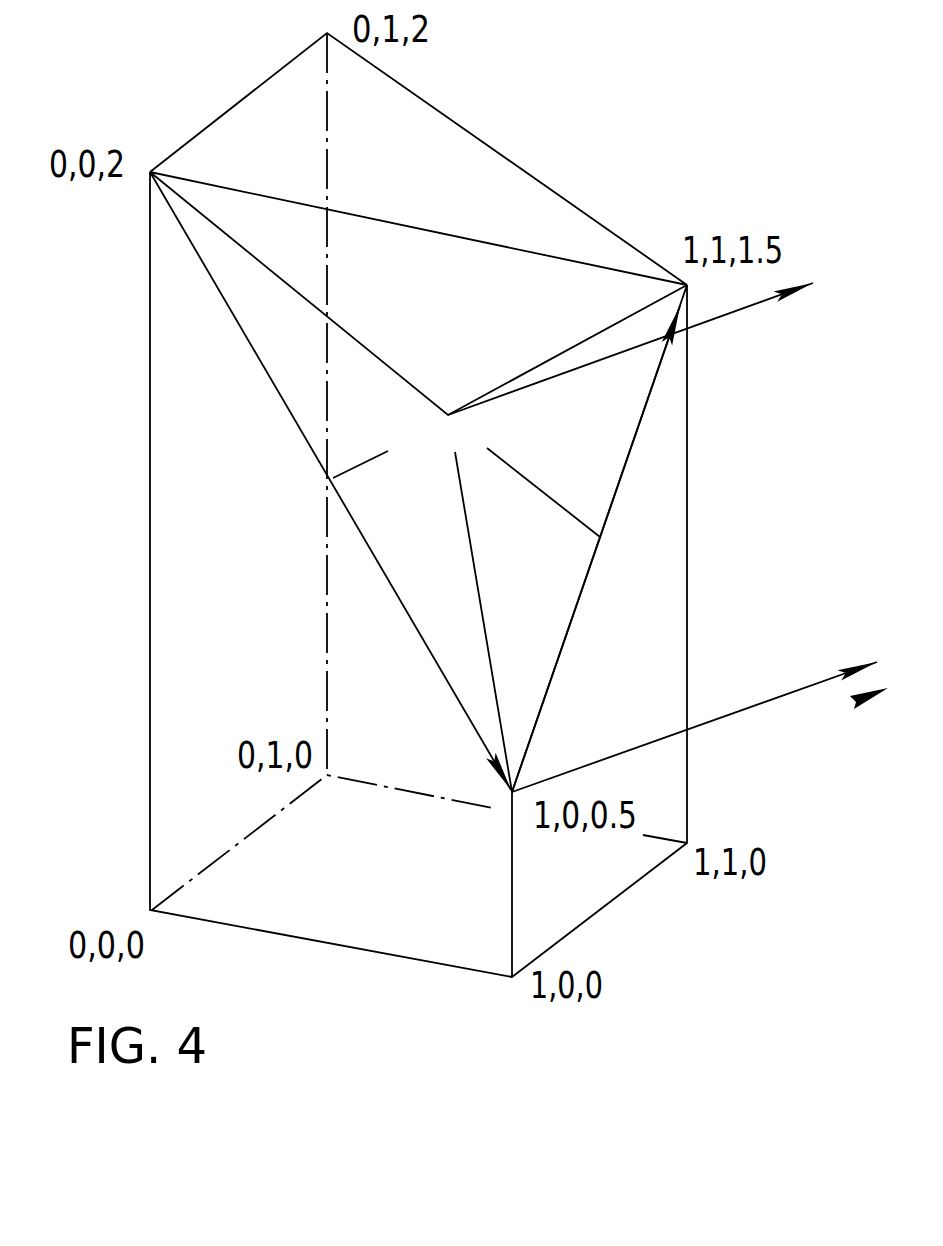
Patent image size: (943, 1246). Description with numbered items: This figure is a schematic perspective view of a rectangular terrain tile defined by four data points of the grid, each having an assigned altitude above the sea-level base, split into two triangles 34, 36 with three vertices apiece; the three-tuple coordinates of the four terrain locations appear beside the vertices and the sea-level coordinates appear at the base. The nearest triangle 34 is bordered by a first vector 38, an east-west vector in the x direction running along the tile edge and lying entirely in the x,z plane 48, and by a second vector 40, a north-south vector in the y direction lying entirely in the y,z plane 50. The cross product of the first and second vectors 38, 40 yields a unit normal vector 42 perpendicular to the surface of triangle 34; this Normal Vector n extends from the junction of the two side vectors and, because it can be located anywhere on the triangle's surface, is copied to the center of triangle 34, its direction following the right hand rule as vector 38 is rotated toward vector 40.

The triangle 34 is at (366, 410).
The triangle 36 is at (357, 165).
The first vector 38 is at (372, 564).
The second vector 40 is at (598, 552).
The normal vector 42 is at (720, 320).
The x,z plane 48 is at (294, 611).
The y,z plane 50 is at (617, 722).
The Normal Vector n is at (620, 357).